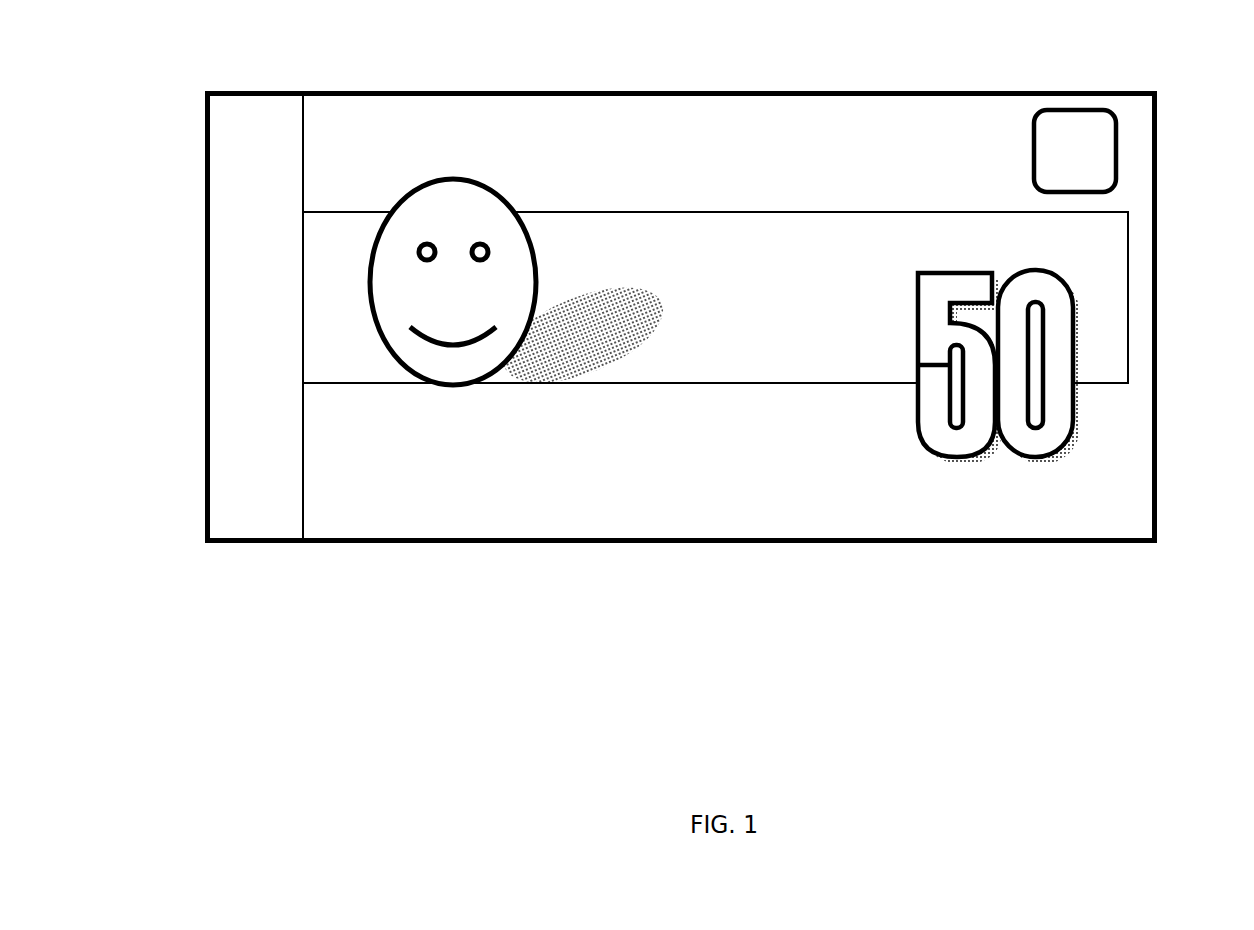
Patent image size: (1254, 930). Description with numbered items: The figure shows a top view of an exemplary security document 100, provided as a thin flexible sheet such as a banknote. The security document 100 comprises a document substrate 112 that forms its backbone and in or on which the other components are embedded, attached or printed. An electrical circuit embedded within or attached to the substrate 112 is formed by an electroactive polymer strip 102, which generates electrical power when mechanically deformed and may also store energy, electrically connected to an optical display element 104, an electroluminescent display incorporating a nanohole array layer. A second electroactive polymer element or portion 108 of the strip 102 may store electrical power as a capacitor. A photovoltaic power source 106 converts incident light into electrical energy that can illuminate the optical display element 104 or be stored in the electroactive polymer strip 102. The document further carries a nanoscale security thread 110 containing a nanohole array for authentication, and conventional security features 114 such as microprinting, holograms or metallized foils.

The security document 100 is at (332, 590).
The electroactive polymer strip 102 is at (1129, 263).
The optical display element 104 is at (462, 220).
The photovoltaic power source 106 is at (1073, 133).
The electroactive polymer capacitor 108 is at (773, 233).
The nanoscale security thread 110 is at (520, 455).
The document substrate 112 is at (1032, 498).
The conventional security features 114 is at (244, 110).